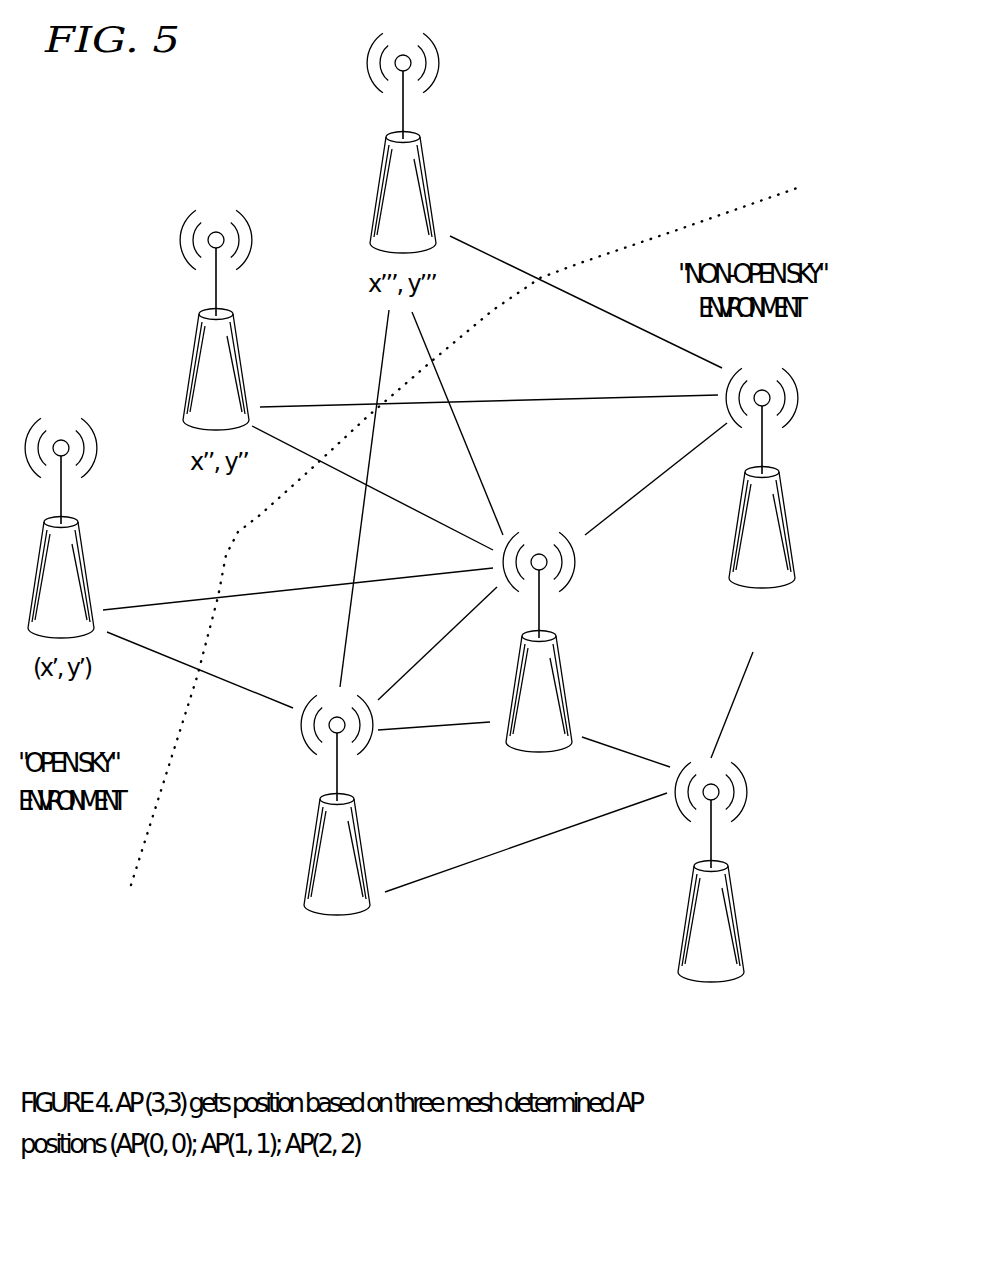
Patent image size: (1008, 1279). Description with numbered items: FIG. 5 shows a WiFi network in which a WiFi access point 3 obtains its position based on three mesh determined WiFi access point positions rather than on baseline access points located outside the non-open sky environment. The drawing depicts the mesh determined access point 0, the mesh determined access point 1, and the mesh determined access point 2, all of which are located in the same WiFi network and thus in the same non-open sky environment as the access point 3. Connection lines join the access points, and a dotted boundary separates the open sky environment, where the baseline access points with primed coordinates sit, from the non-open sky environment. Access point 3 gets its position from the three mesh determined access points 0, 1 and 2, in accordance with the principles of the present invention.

The mesh determined access point (x0,y0) 0 is at (541, 664).
The mesh determined access point (x1,y1) 1 is at (338, 827).
The mesh determined access point (x2,y2) 2 is at (762, 500).
The access point (x3,y3) 3 is at (711, 894).